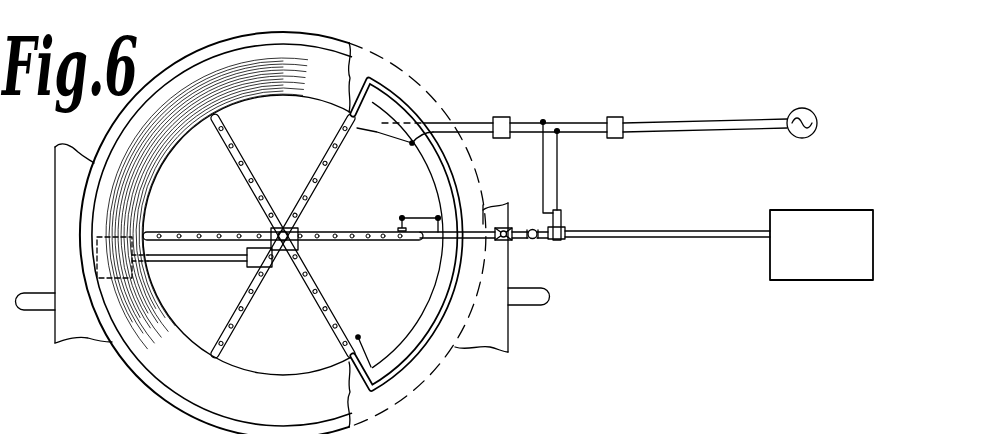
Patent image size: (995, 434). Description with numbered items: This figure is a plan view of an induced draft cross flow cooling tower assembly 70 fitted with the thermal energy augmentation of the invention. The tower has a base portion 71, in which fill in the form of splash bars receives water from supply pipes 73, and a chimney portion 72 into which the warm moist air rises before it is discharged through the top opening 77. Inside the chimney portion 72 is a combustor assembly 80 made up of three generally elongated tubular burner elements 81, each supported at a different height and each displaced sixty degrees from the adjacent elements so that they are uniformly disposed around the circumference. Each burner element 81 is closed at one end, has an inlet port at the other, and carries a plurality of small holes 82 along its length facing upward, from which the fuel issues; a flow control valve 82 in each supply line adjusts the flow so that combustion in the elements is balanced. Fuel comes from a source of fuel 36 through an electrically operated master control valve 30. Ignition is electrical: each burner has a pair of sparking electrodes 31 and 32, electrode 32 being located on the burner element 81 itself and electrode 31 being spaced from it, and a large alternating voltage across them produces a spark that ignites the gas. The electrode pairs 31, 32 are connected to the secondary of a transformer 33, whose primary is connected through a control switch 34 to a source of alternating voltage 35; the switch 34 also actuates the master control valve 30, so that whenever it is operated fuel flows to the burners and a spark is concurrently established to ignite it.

The master control valve 30 is at (565, 218).
The discharge electrode 31 is at (377, 133).
The electrode 32 is at (357, 129).
The transformer 33 is at (500, 117).
The control switch 34 is at (615, 117).
The source of alternating voltage 35 is at (806, 99).
The source of fuel 36 is at (798, 213).
The cooling tower assembly 70 is at (225, 233).
The base portion 71 is at (508, 325).
The chimney portion 72 is at (147, 390).
The supply pipes 73 is at (33, 297).
The top opening 77 is at (349, 43).
The combustor assembly 80 is at (278, 185).
The burner elements 81 is at (322, 322).
The small holes 82 is at (505, 241).